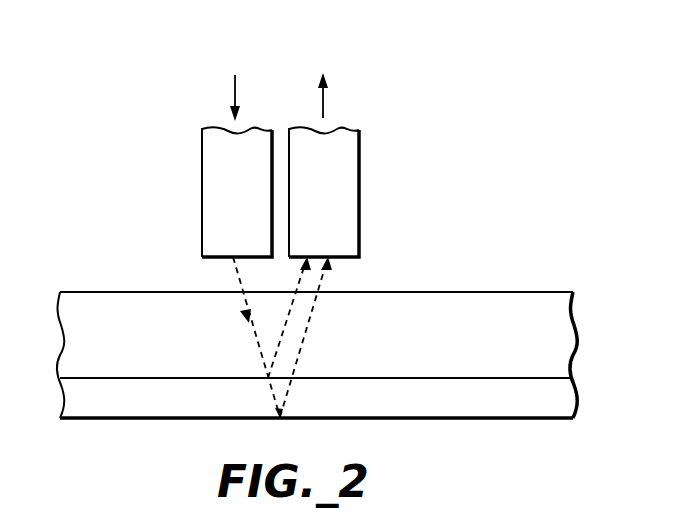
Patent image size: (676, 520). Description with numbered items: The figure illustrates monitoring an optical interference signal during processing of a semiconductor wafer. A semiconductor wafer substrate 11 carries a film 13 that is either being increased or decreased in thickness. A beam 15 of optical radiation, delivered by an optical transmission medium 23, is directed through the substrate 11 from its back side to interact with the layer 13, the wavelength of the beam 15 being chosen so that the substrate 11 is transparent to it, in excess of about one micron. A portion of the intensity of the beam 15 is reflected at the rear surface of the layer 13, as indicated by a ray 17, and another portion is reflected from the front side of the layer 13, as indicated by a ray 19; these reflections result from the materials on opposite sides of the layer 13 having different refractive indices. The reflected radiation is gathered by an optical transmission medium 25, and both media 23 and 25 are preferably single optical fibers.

The semiconductor wafer substrate 11 is at (490, 303).
The film 13 is at (527, 410).
The beam of optical radiation 15 is at (238, 278).
The ray 17 is at (298, 284).
The ray 19 is at (326, 284).
The optical transmission medium 23 is at (210, 183).
The optical transmission medium 25 is at (352, 192).